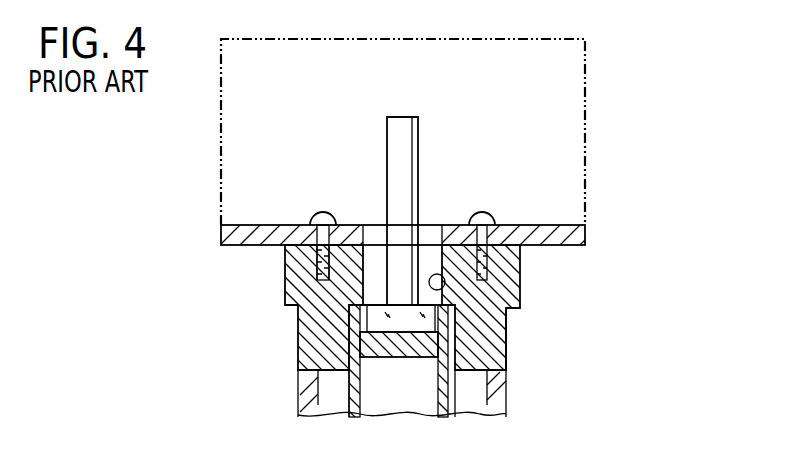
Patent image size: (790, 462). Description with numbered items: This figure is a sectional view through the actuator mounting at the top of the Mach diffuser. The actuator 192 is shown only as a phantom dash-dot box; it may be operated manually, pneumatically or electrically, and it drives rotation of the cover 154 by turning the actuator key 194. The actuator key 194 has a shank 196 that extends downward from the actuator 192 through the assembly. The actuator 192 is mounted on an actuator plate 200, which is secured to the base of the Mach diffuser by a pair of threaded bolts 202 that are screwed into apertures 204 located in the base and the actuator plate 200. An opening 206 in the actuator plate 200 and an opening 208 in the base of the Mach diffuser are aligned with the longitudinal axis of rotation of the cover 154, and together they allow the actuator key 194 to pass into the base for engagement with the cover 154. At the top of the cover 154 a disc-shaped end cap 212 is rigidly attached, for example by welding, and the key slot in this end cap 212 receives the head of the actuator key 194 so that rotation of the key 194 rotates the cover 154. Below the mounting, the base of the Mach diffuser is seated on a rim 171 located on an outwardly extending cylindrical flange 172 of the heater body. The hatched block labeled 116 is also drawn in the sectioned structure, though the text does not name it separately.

The actuator 192 is at (568, 63).
The actuator key 194 is at (393, 132).
The shank 196 is at (408, 172).
The actuator plate 200 is at (550, 240).
The threaded bolts 202 is at (316, 218).
The apertures 204 is at (318, 233).
The opening 206 is at (430, 235).
The opening 208 is at (445, 290).
The bearing block 116 is at (292, 289).
The rim 171 is at (485, 360).
The cylindrical flange 172 is at (300, 387).
The end cap 212 is at (403, 350).
The cover 154 is at (437, 405).